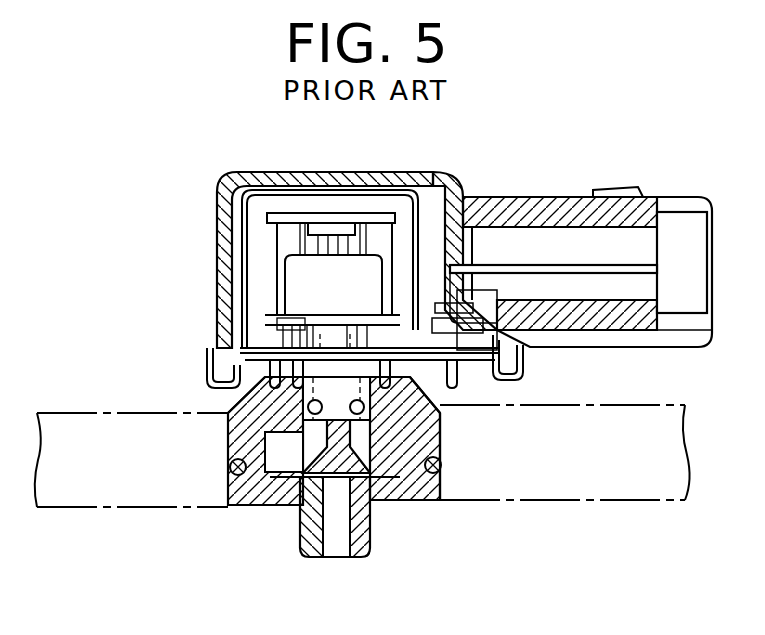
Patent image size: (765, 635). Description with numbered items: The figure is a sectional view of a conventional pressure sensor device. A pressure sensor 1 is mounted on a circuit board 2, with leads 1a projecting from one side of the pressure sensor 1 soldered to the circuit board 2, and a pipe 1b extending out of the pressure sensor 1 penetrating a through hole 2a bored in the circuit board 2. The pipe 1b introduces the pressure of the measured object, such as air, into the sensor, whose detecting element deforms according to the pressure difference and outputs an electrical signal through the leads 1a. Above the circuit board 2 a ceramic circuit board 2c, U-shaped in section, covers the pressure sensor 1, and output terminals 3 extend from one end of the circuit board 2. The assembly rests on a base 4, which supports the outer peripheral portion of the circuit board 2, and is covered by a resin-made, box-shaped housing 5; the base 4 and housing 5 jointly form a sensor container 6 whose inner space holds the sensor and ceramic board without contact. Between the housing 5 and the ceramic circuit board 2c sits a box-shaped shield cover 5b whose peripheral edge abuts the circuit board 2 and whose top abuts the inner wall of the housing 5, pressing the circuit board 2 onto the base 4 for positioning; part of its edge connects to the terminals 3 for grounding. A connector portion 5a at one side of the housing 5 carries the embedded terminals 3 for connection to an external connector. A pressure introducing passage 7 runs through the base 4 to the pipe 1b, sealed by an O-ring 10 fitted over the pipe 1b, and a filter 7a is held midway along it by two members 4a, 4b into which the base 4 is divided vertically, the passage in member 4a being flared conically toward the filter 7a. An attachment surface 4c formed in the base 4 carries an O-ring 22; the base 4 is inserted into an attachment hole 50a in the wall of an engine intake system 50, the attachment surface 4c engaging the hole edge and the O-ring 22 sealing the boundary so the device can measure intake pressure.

The pressure sensor 1 is at (305, 279).
The leads 1a is at (232, 312).
The pipe 1b is at (380, 508).
The circuit board 2 is at (263, 348).
The through hole 2a is at (235, 385).
The ceramic circuit board 2c is at (303, 213).
The output terminals 3 is at (632, 275).
The base 4 is at (228, 418).
The member 4a is at (228, 437).
The member 4b is at (240, 507).
The attachment surface 4c is at (442, 440).
The housing 5 is at (248, 348).
The connector portion 5a is at (655, 195).
The shield cover 5b is at (432, 200).
The sensor container 6 is at (115, 320).
The pressure introducing passage 7 is at (345, 558).
The filter 7a is at (300, 512).
The O-ring 10 is at (443, 414).
The O-ring 22 is at (230, 470).
The engine intake system 50 is at (545, 502).
The attachment hole 50a is at (440, 507).